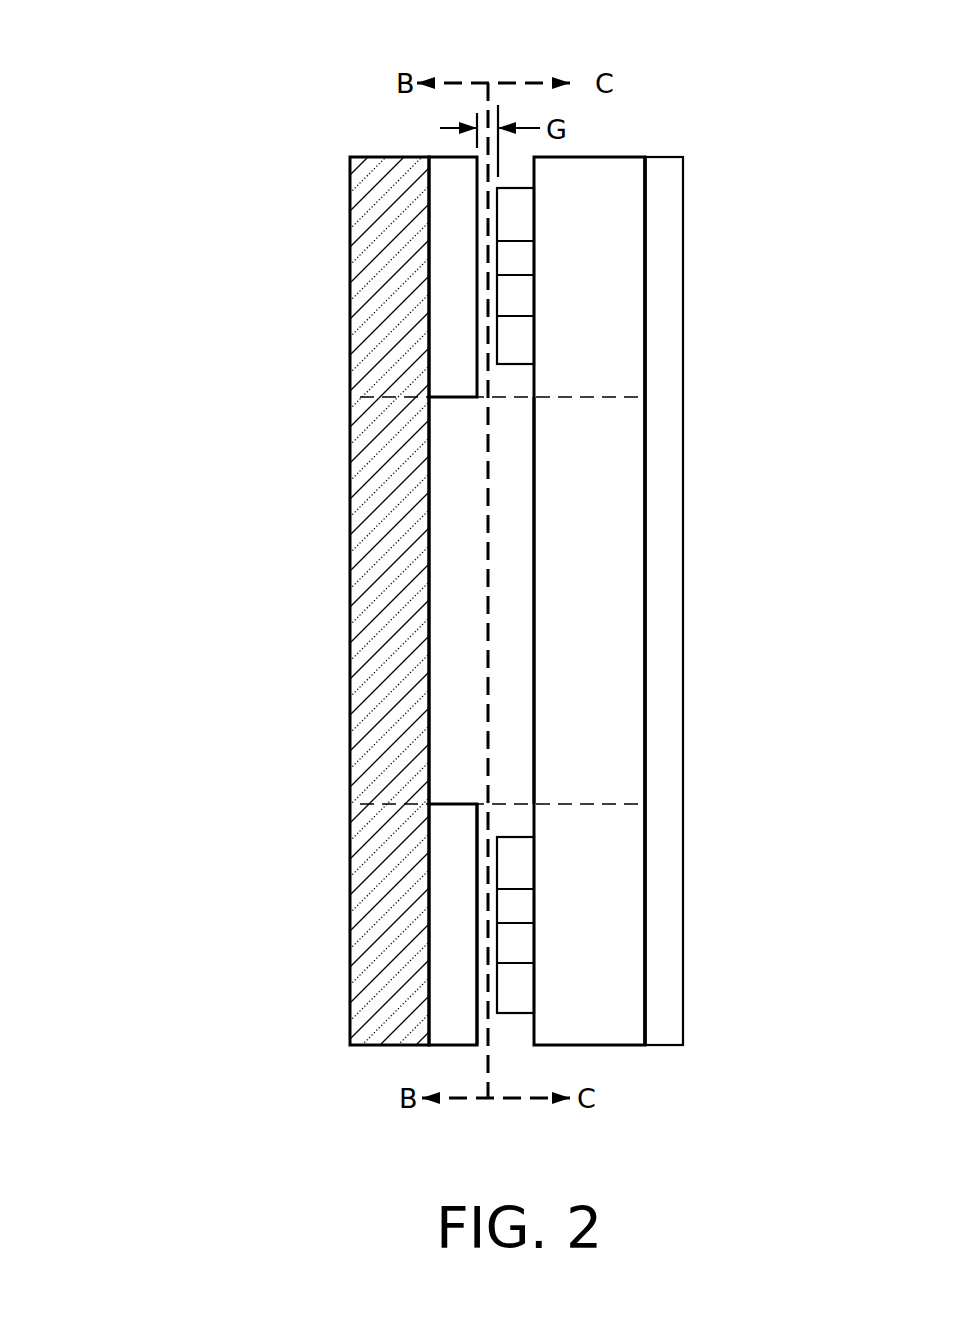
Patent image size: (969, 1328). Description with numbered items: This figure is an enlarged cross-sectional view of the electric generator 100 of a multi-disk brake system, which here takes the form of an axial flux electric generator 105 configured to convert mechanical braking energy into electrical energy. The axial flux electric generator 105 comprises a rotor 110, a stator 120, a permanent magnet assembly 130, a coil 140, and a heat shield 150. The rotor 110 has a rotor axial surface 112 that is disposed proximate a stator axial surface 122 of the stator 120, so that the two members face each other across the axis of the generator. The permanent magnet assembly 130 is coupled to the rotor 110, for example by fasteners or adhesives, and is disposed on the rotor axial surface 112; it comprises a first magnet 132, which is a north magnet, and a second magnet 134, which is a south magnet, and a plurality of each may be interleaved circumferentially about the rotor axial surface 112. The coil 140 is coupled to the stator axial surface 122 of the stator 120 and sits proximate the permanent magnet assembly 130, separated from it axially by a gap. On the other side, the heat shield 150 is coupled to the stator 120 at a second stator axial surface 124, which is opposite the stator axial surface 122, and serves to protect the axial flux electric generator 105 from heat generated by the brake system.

The electric generator 100 is at (307, 100).
The axial flux electric generator 105 is at (247, 145).
The rotor 110 is at (382, 345).
The rotor axial surface 112 is at (430, 446).
The stator 120 is at (619, 658).
The stator axial surface 122 is at (536, 492).
The second stator axial surface 124 is at (646, 269).
The permanent magnet assembly 130 is at (457, 897).
The first magnet 132 is at (457, 252).
The second magnet 134 is at (450, 973).
The coil 140 is at (513, 868).
The heat shield 150 is at (655, 681).